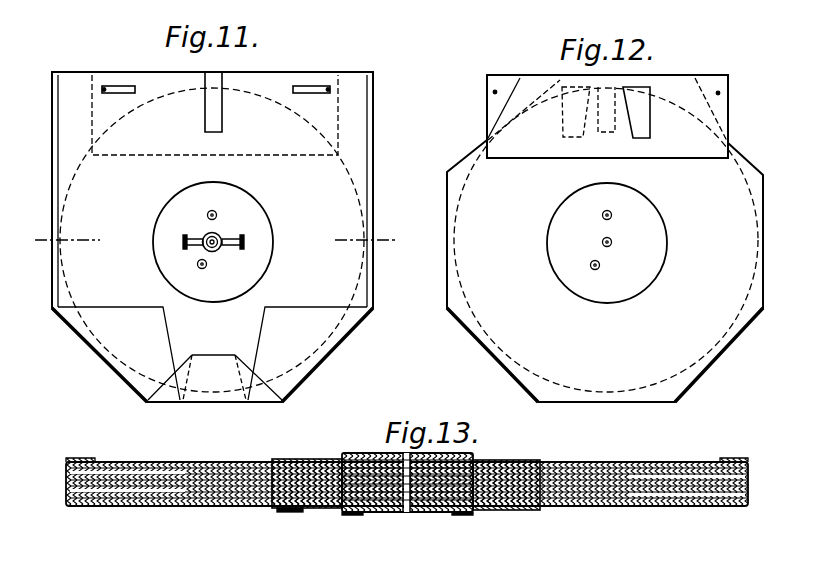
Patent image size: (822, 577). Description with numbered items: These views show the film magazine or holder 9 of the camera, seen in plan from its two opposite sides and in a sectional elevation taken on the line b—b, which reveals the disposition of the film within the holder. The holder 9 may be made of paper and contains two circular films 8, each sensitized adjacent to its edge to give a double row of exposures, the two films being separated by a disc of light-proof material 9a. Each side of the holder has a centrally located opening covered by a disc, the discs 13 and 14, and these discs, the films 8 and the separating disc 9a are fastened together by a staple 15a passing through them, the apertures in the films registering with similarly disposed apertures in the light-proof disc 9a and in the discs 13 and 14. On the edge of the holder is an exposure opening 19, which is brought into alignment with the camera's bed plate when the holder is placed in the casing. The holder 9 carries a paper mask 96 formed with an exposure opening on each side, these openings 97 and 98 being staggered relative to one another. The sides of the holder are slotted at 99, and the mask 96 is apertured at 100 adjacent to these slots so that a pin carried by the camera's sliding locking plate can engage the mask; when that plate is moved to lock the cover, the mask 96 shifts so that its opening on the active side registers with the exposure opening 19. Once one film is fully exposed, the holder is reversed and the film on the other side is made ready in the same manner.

In FIG. 11, the circular film 8 is at (212, 237).
In FIG. 13, the circular film 8 is at (126, 470).
In FIG. 12, the holder or magazine 9 is at (765, 280).
In FIG. 13, the holder or magazine 9 is at (690, 462).
In FIG. 13, the disc of light-proof material 9a is at (300, 506).
In FIG. 12, the disc 13 is at (650, 262).
In FIG. 13, the disc 13 is at (526, 510).
In FIG. 11, the disc 14 is at (262, 237).
In FIG. 13, the disc 14 is at (303, 458).
In FIG. 11, the staple 15a is at (226, 238).
In FIG. 13, the staple 15a is at (360, 453).
In FIG. 11, the exposure opening 19 is at (223, 78).
In FIG. 11, the paper mask 96 is at (340, 121).
In FIG. 12, the paper mask 96 is at (722, 126).
In FIG. 12, the exposure opening of the mask 97 is at (568, 138).
In FIG. 12, the exposure opening of the mask 98 is at (645, 138).
In FIG. 11, the slot 99 is at (306, 87).
In FIG. 11, the aperture of the mask 100 is at (332, 88).
In FIG. 12, the aperture of the mask 100 is at (721, 93).
In FIG. 11, the section line b is at (214, 231).